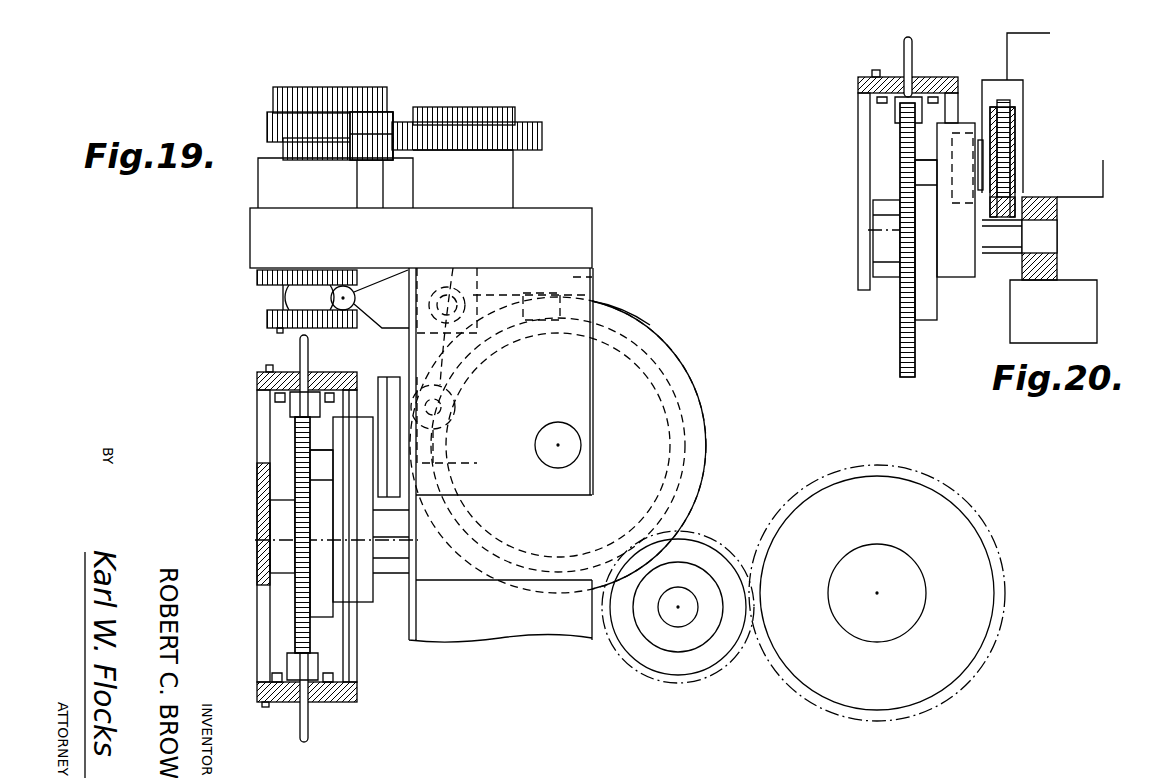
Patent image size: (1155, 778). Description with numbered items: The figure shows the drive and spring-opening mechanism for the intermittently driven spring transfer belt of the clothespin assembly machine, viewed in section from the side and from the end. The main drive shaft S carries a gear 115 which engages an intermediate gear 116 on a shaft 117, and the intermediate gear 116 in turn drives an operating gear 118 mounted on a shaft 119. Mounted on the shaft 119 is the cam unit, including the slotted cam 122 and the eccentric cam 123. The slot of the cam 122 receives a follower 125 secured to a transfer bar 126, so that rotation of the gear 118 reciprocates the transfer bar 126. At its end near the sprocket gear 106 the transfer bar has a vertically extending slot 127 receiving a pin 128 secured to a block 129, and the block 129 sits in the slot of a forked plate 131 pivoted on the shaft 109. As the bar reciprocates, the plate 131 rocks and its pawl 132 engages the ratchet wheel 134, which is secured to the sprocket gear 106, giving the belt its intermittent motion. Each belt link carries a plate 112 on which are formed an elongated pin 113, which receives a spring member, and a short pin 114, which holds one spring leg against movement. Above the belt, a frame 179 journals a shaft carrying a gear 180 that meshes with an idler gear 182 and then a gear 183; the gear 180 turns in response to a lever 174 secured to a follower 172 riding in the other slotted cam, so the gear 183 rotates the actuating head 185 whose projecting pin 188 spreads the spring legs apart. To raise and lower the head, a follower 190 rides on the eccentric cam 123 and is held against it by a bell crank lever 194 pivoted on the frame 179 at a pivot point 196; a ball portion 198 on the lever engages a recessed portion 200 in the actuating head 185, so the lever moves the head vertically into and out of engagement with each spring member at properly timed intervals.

In FIG. 19, the gear 183 is at (266, 125).
In FIG. 19, the idler gear 182 is at (378, 110).
In FIG. 19, the gear 180 is at (540, 124).
In FIG. 19, the frame 179 is at (566, 214).
In FIG. 19, the ball portion 198 is at (347, 277).
In FIG. 19, the bell crank lever 194 is at (381, 283).
In FIG. 19, the pivot point 196 is at (457, 270).
In FIG. 19, the recessed portion 200 is at (283, 296).
In FIG. 19, the actuating head 185 is at (276, 315).
In FIG. 19, the projecting pin 188 is at (275, 331).
In FIG. 19, the elongated pin 113 is at (309, 346).
In FIG. 20, the elongated pin 113 is at (904, 46).
In FIG. 19, the short pin 114 is at (266, 365).
In FIG. 20, the short pin 114 is at (876, 72).
In FIG. 19, the plate 112 is at (257, 380).
In FIG. 20, the plate 112 is at (858, 82).
In FIG. 19, the transfer bar 126 is at (396, 396).
In FIG. 20, the transfer bar 126 is at (1014, 117).
In FIG. 19, the sprocket gear 106 is at (295, 449).
In FIG. 20, the sprocket gear 106 is at (900, 157).
In FIG. 19, the ratchet wheel 134 is at (331, 478).
In FIG. 20, the ratchet wheel 134 is at (923, 168).
In FIG. 19, the shaft 109 is at (262, 537).
In FIG. 19, the follower 190 is at (458, 408).
In FIG. 19, the shaft 119 is at (559, 426).
In FIG. 19, the follower 125 is at (466, 452).
In FIG. 19, the lever 174 is at (595, 278).
In FIG. 19, the follower 172 is at (599, 303).
In FIG. 19, the eccentric cam 123 is at (630, 340).
In FIG. 19, the slotted cam 122 is at (690, 373).
In FIG. 19, the operating gear 118 is at (690, 476).
In FIG. 19, the intermediate gear 116 is at (727, 545).
In FIG. 19, the shaft 117 is at (675, 618).
In FIG. 19, the gear 115 is at (1002, 571).
In FIG. 19, the main drive shaft S is at (905, 600).
In FIG. 19, the forked plate 131 is at (363, 590).
In FIG. 20, the forked plate 131 is at (963, 263).
In FIG. 19, the pawl 132 is at (320, 603).
In FIG. 20, the pawl 132 is at (923, 298).
In FIG. 20, the vertically extending slot 127 is at (1008, 138).
In FIG. 20, the block 129 is at (1015, 148).
In FIG. 20, the pin 128 is at (1018, 165).